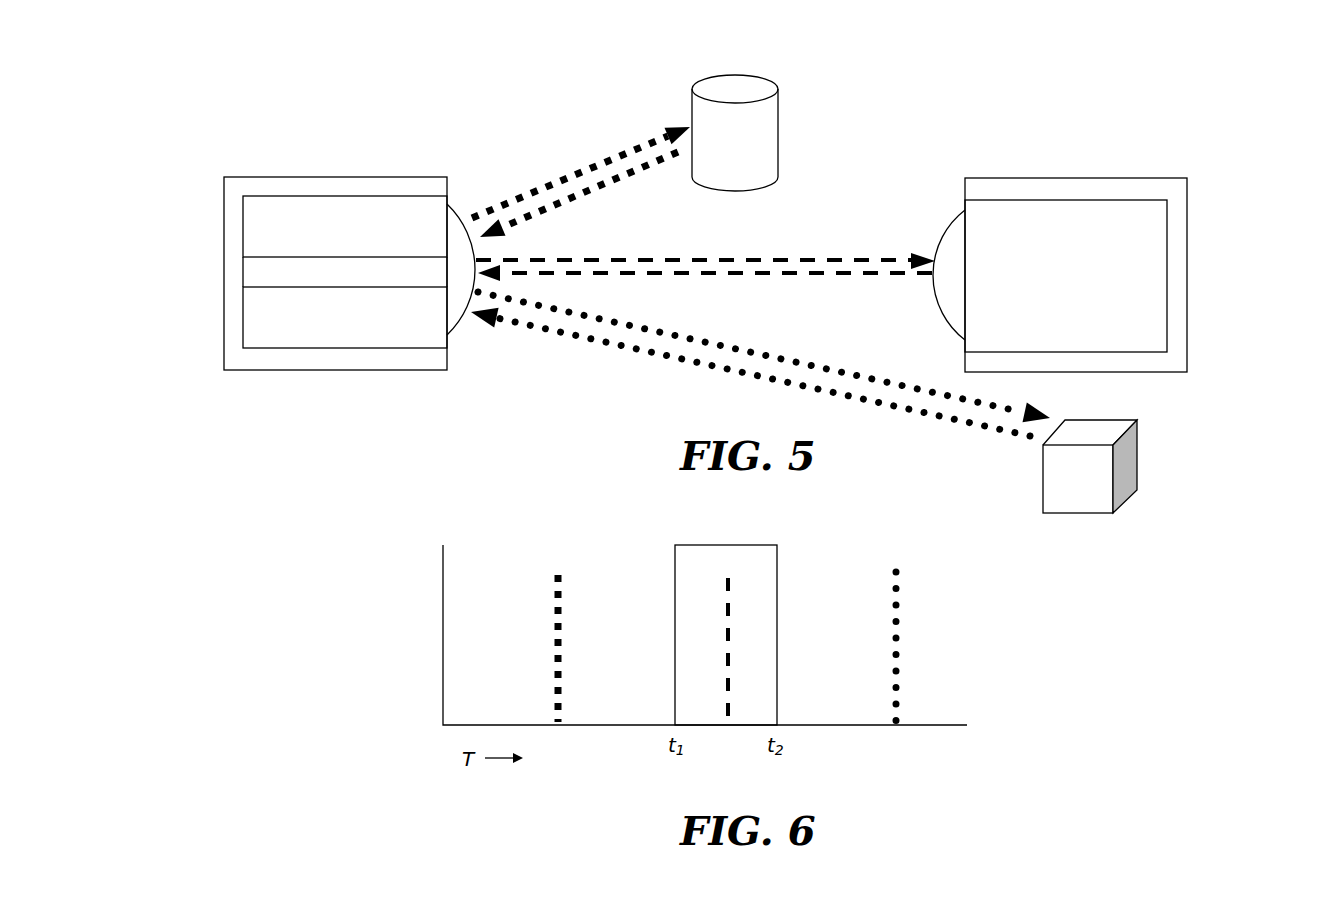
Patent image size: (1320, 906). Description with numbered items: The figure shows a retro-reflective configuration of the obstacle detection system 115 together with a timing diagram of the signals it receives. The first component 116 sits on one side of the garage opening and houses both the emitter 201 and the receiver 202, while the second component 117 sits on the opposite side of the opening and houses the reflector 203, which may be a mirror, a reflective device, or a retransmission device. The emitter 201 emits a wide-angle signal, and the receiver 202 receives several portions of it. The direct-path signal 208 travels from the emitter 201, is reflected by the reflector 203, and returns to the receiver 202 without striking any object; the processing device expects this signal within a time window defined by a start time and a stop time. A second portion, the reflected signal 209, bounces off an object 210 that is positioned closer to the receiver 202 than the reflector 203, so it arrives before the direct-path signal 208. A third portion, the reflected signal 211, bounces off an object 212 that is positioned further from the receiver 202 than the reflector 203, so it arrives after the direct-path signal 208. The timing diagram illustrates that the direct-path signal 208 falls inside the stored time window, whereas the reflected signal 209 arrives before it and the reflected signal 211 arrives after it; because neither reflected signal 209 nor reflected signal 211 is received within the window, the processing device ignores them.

In FIG. 5, the obstacle detection system 115 is at (308, 66).
In FIG. 5, the first component 116 is at (279, 165).
In FIG. 5, the second component 117 is at (1121, 168).
In FIG. 5, the emitter 201 is at (243, 228).
In FIG. 5, the receiver 202 is at (243, 304).
In FIG. 5, the reflector 203 is at (1167, 270).
In FIG. 5, the direct-path signal 208 is at (728, 257).
In FIG. 6, the direct-path signal 208 is at (735, 605).
In FIG. 5, the reflected signal 209 is at (612, 150).
In FIG. 6, the reflected signal 209 is at (560, 605).
In FIG. 5, the object 210 is at (780, 110).
In FIG. 5, the reflected signal 211 is at (815, 352).
In FIG. 6, the reflected signal 211 is at (898, 605).
In FIG. 5, the object 212 is at (1140, 441).